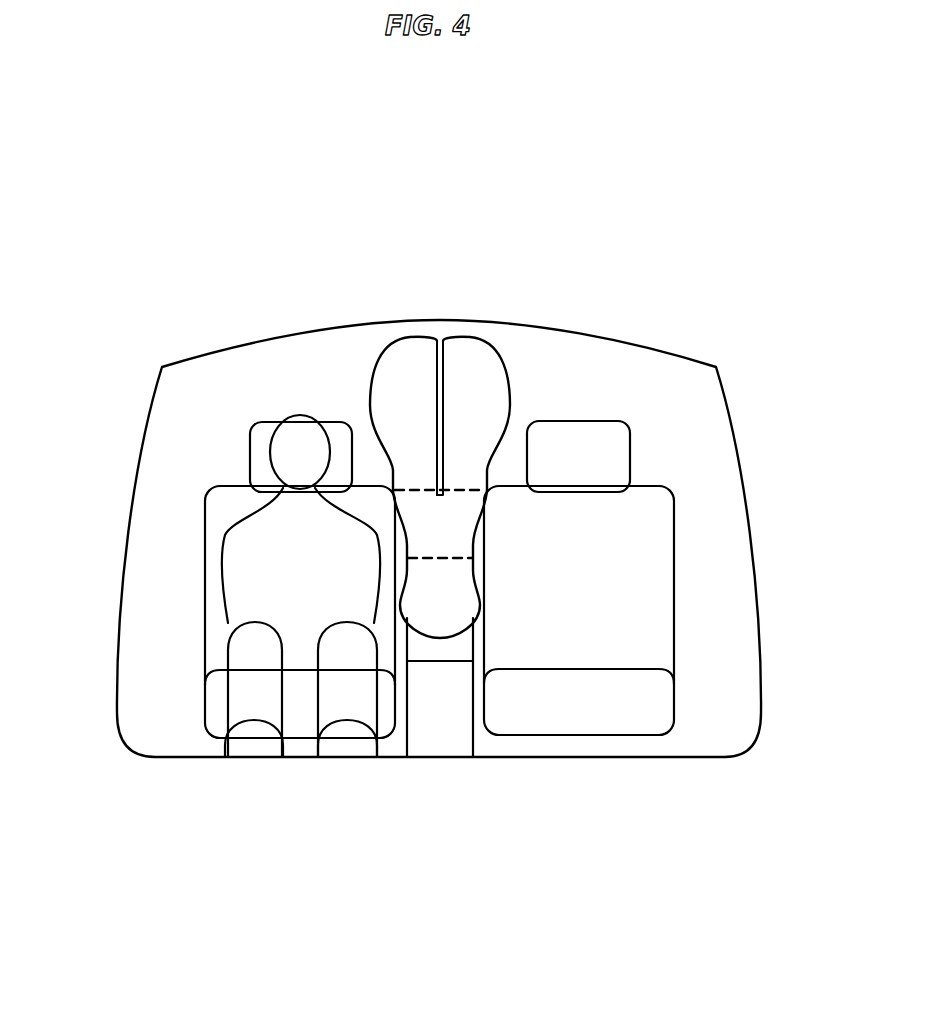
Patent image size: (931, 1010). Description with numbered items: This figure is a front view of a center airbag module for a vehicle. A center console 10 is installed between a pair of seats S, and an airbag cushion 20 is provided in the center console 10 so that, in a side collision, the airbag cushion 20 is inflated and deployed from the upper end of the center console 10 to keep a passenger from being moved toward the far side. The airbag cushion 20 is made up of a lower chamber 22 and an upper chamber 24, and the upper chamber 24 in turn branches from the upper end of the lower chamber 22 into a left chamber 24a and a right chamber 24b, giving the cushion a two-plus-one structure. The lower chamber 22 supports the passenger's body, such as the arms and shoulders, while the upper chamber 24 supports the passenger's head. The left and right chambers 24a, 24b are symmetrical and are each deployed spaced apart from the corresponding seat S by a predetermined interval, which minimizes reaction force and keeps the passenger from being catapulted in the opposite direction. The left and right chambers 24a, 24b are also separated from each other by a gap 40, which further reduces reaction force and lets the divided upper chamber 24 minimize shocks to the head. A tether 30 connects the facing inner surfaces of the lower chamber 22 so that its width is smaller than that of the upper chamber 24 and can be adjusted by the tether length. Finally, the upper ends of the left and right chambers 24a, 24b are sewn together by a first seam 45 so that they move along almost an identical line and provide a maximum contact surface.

The center console 10 is at (442, 652).
The airbag cushion 20 is at (494, 383).
The lower chamber 22 is at (447, 520).
The upper chamber 24 is at (426, 322).
The left chamber 24a is at (410, 363).
The right chamber 24b is at (482, 349).
The tether 30 is at (418, 490).
The gap 40 is at (437, 393).
The first seam 45 is at (440, 340).
The seat S is at (257, 445).